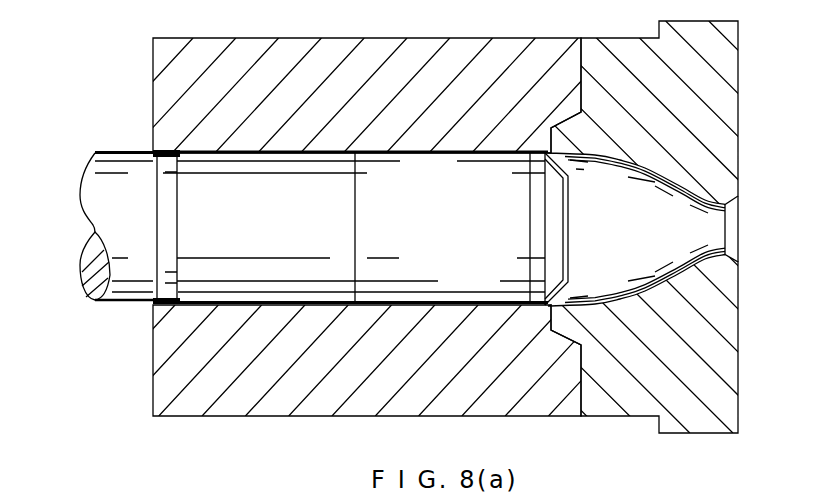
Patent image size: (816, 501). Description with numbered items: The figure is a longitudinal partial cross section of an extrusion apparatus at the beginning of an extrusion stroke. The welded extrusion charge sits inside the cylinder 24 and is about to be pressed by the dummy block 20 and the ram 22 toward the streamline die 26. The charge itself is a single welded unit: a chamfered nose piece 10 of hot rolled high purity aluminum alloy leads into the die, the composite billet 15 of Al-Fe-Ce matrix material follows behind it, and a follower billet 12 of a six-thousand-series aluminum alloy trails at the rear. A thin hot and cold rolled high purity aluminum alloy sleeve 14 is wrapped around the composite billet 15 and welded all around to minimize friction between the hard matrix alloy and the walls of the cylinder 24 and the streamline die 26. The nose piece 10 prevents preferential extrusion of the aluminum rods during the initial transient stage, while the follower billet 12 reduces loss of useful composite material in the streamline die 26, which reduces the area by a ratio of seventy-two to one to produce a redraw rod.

The chamfered nose piece 10 is at (568, 208).
The follower billet 12 is at (268, 234).
The sleeve 14 is at (419, 157).
The composite billet 15 is at (457, 235).
The dummy block 20 is at (165, 272).
The ram 22 is at (82, 175).
The cylinder 24 is at (238, 417).
The streamline die 26 is at (653, 237).